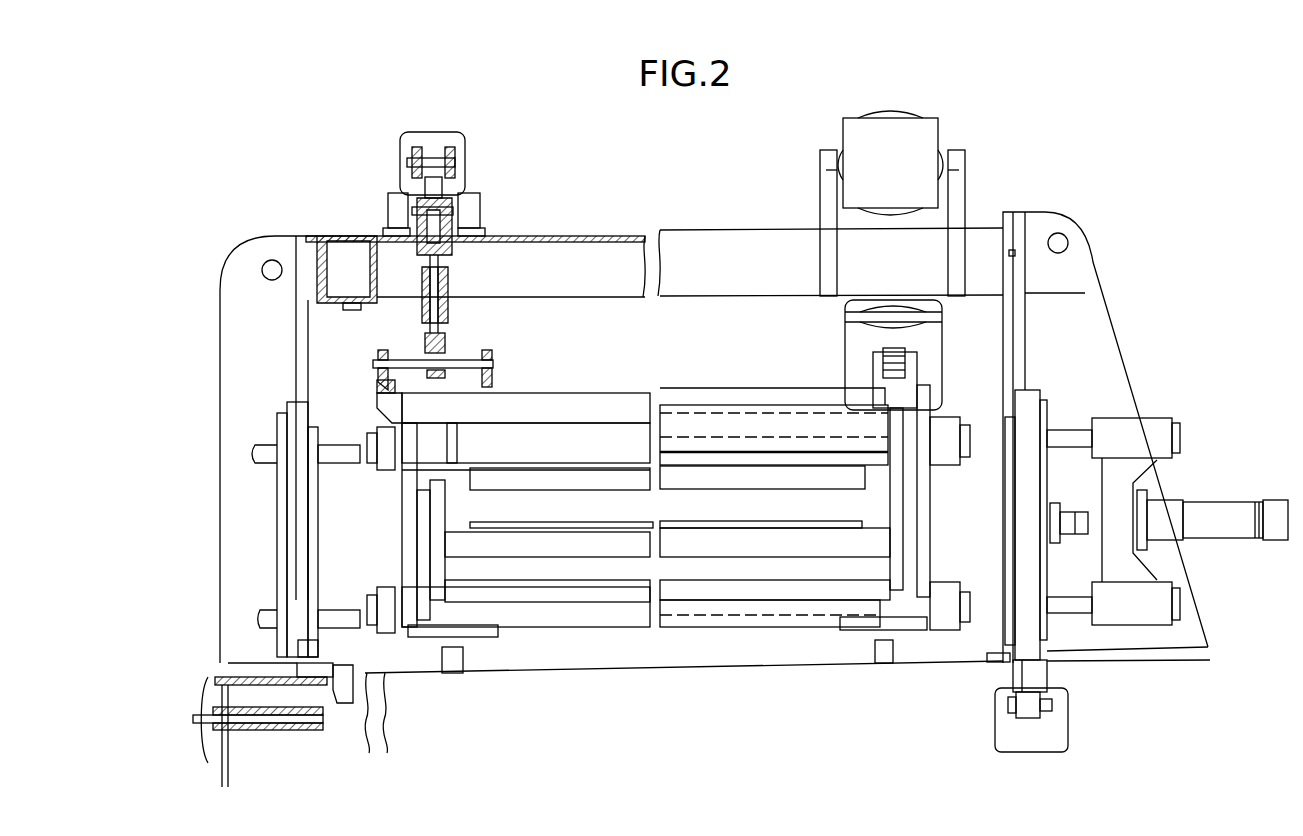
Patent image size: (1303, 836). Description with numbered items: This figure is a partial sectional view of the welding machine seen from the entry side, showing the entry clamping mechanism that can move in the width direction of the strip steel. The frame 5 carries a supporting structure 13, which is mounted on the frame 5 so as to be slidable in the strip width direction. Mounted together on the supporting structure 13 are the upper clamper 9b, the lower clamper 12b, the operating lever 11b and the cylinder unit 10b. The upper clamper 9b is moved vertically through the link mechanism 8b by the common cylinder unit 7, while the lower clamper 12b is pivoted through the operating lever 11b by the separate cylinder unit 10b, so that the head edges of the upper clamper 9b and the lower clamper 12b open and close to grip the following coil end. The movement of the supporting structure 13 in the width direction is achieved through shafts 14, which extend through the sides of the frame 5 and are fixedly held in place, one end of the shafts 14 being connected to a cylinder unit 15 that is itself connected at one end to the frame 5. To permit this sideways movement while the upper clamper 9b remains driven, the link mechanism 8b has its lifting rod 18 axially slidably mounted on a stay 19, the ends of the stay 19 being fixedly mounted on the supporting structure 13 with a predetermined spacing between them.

The frame 5 is at (1028, 402).
The common cylinder unit 7 is at (850, 133).
The link mechanism 8b is at (452, 230).
The upper clamper 9b is at (850, 478).
The cylinder unit 10b is at (933, 355).
The operating lever 11b is at (897, 535).
The lower clamper 12b is at (868, 532).
The supporting structure 13 is at (528, 397).
The shafts 14 is at (1057, 438).
The cylinder unit 15 is at (1205, 510).
The lifting rod 18 is at (445, 338).
The stay 19 is at (467, 363).